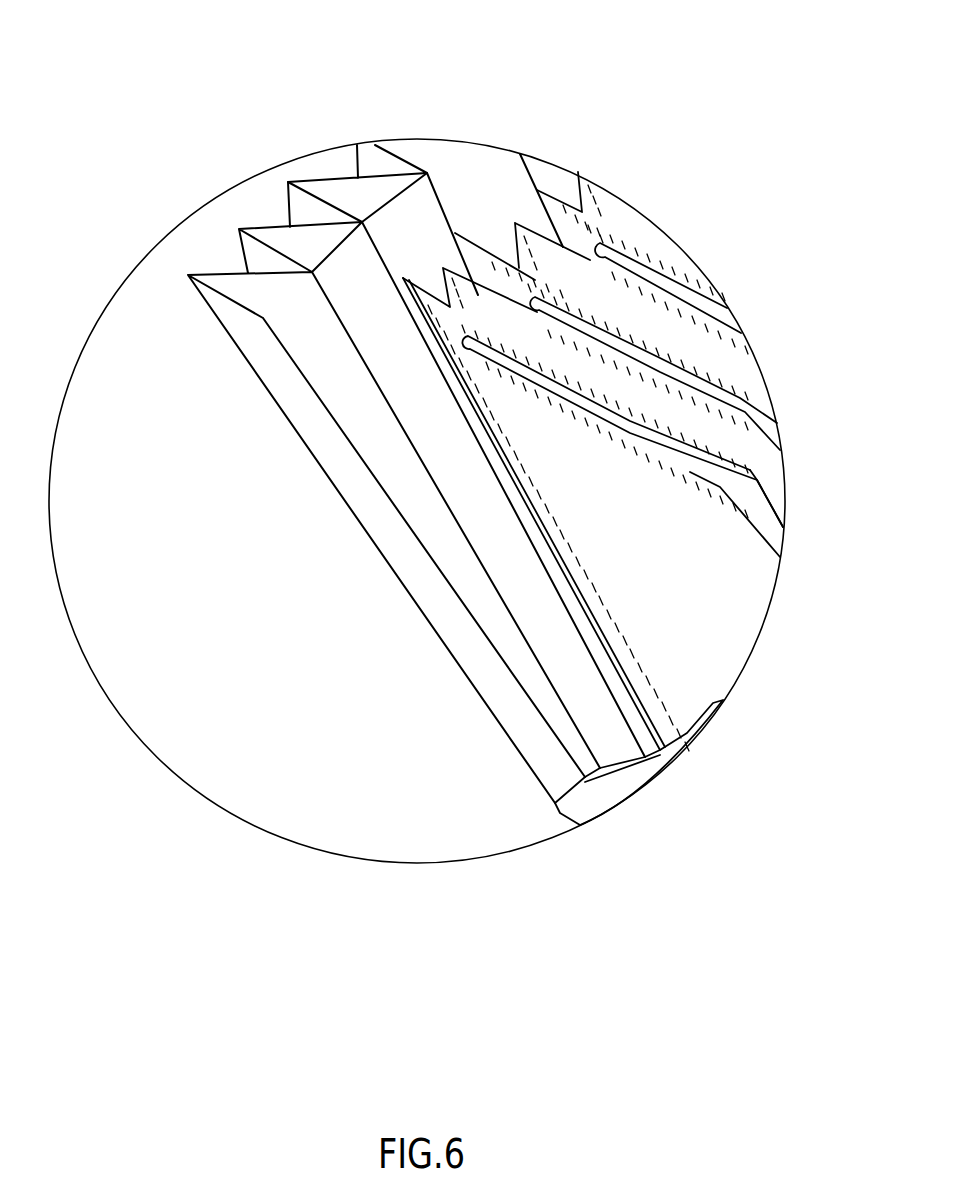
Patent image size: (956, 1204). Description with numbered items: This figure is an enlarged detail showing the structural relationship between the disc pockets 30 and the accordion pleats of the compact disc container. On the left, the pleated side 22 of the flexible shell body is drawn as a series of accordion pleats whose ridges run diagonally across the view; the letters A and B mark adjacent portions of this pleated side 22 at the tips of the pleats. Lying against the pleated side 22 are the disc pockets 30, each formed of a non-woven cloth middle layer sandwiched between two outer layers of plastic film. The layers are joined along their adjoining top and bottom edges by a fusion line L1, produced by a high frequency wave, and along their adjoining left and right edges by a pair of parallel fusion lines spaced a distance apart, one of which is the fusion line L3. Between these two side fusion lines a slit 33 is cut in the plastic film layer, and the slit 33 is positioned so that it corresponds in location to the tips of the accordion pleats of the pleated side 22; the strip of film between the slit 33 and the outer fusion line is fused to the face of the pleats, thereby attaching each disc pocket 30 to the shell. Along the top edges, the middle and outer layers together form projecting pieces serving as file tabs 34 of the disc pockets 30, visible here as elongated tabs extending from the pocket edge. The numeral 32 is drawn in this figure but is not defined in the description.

The pleated side 22 is at (266, 206).
The groove valley A is at (365, 220).
The ridge peak B is at (323, 200).
The disc pocket 30 is at (704, 612).
The perforated cover sheet 32 is at (653, 437).
The slit 33 is at (512, 487).
The file tab 34 is at (606, 245).
The fusion line L1 is at (755, 472).
The fusion line L3 is at (480, 392).